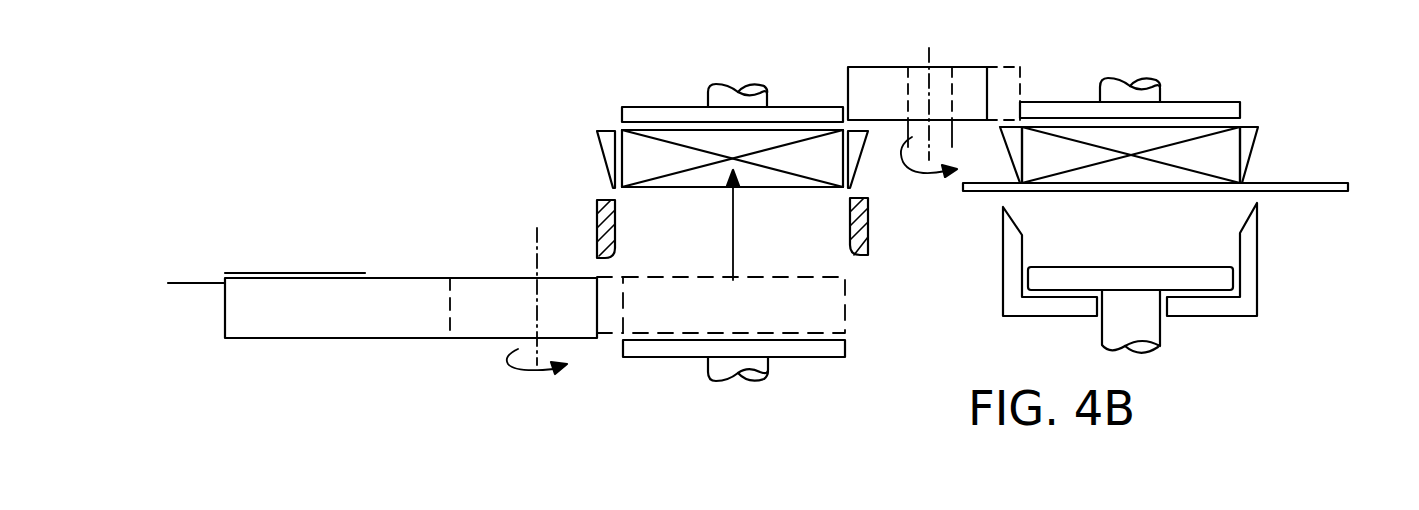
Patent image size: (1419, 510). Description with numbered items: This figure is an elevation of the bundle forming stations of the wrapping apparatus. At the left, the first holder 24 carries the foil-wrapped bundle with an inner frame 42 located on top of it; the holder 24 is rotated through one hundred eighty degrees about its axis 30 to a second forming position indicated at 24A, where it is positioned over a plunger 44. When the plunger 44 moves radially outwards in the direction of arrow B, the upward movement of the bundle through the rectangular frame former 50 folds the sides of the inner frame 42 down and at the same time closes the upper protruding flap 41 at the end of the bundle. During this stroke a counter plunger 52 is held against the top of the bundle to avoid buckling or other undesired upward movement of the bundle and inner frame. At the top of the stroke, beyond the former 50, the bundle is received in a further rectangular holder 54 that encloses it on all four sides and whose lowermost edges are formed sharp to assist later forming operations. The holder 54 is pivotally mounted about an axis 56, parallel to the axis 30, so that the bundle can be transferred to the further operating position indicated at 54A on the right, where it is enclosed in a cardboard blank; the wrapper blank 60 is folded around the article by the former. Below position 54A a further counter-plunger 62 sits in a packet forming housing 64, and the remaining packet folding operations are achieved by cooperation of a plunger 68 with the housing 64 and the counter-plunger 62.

The holder 24 is at (378, 339).
The second forming position 24A is at (848, 305).
The axis 30 is at (532, 272).
The upper protruding flap 41 is at (183, 282).
The inner frame 42 is at (302, 273).
The plunger 44 is at (800, 357).
The rectangular frame former 50 is at (868, 237).
The counter plunger 52 is at (672, 107).
The rectangular holder 54 is at (600, 143).
The further operating position 54A is at (1278, 116).
The axis 56 is at (907, 145).
The blank 60 is at (1325, 183).
The counter-plunger 62 is at (1181, 282).
The packet forming housing 64 is at (1256, 318).
The plunger 68 is at (1215, 102).
The arrow B is at (735, 228).